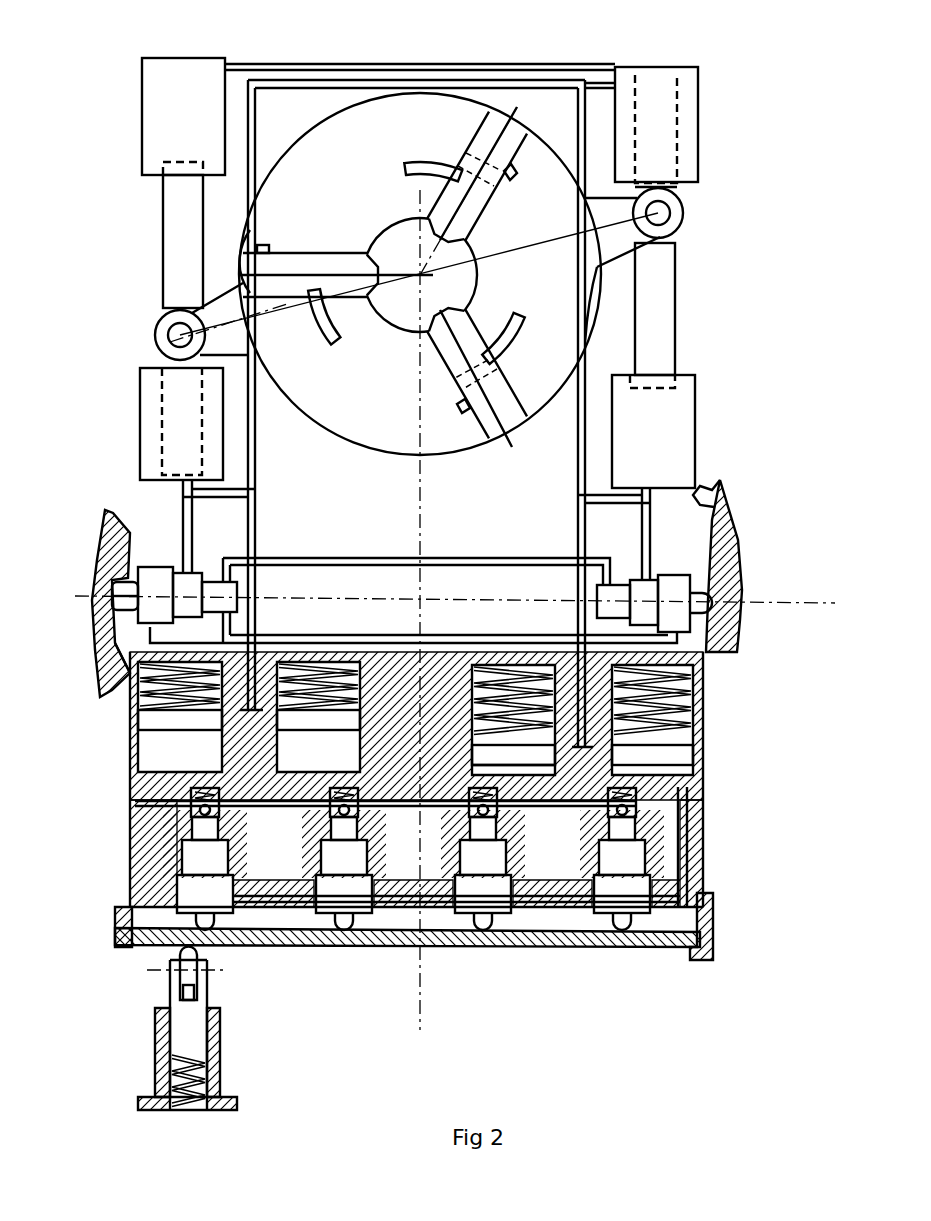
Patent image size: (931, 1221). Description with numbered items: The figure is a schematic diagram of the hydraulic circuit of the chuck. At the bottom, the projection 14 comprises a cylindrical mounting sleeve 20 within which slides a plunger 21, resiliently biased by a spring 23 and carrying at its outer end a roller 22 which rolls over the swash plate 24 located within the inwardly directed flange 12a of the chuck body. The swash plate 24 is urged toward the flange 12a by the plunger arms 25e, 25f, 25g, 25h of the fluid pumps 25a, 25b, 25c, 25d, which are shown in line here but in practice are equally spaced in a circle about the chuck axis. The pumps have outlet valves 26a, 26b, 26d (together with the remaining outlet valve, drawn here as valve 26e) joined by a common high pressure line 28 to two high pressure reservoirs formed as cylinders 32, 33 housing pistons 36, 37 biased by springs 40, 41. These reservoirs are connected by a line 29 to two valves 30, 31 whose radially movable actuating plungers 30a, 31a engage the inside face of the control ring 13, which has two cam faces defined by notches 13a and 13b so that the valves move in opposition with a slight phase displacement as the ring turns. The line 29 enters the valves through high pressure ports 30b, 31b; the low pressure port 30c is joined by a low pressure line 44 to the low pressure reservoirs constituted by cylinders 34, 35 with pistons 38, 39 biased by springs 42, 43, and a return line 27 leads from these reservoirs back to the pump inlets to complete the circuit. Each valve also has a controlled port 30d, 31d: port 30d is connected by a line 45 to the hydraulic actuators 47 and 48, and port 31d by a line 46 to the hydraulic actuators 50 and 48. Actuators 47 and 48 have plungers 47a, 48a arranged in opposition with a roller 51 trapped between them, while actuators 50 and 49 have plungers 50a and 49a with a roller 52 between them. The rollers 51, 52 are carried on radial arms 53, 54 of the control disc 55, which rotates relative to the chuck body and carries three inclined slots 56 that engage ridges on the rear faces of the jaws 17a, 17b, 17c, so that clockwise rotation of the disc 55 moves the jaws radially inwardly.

The inwardly directed flange 12a is at (705, 958).
The control ring 13 is at (732, 557).
The notch 13a is at (112, 648).
The notch 13b is at (720, 492).
The projection 14 is at (155, 1032).
The jaw 17a is at (318, 258).
The jaw 17b is at (480, 193).
The jaw 17c is at (500, 390).
The cylindrical mounting sleeve 20 is at (155, 1070).
The plunger 21 is at (192, 1020).
The roller 22 is at (182, 981).
The spring 23 is at (205, 1082).
The swash plate 24 is at (555, 950).
The fluid pump 25a is at (205, 865).
The fluid pump 25b is at (344, 865).
The fluid pump 25c is at (483, 865).
The fluid pump 25d is at (622, 865).
The plunger arm 25e is at (213, 937).
The plunger arm 25f is at (345, 937).
The plunger arm 25g is at (482, 937).
The plunger arm 25h is at (620, 937).
The outlet valve 26a is at (210, 808).
The outlet valve 26b is at (352, 812).
The outlet valve 26d is at (490, 810).
The valve 26e is at (633, 815).
The return line 27 is at (690, 866).
The high pressure line 28 is at (407, 847).
The line 29 is at (445, 562).
The valve 30 is at (154, 578).
The actuating plunger 30a is at (118, 583).
The high pressure port 30b is at (240, 580).
The low pressure port 30c is at (122, 660).
The controlled port 30d is at (195, 578).
The valve 31 is at (677, 580).
The actuating plunger 31a is at (705, 608).
The high pressure port 31b is at (600, 588).
The controlled port 31d is at (640, 582).
The cylinder 32 is at (150, 790).
The cylinder 33 is at (358, 772).
The cylinder 34 is at (478, 722).
The cylinder 35 is at (697, 774).
The piston 36 is at (207, 720).
The piston 37 is at (350, 723).
The piston 38 is at (487, 750).
The piston 39 is at (690, 752).
The spring 40 is at (140, 770).
The spring 41 is at (353, 675).
The spring 42 is at (470, 688).
The spring 43 is at (683, 708).
The low pressure line 44 is at (355, 632).
The line 45 is at (255, 448).
The line 46 is at (578, 457).
The hydraulic actuator 47 is at (140, 398).
The actuating plunger 47a is at (165, 352).
The hydraulic actuator 48 is at (165, 93).
The actuating plunger 48a is at (175, 193).
The hydraulic actuator 49 is at (683, 115).
The actuating plunger 49a is at (682, 190).
The hydraulic actuator 50 is at (683, 402).
The actuating plunger 50a is at (660, 303).
The roller 51 is at (163, 318).
The roller 52 is at (685, 223).
The radial arm 53 is at (163, 332).
The radial arm 54 is at (672, 236).
The control disc 55 is at (453, 435).
The inclined slot 56 is at (432, 160).